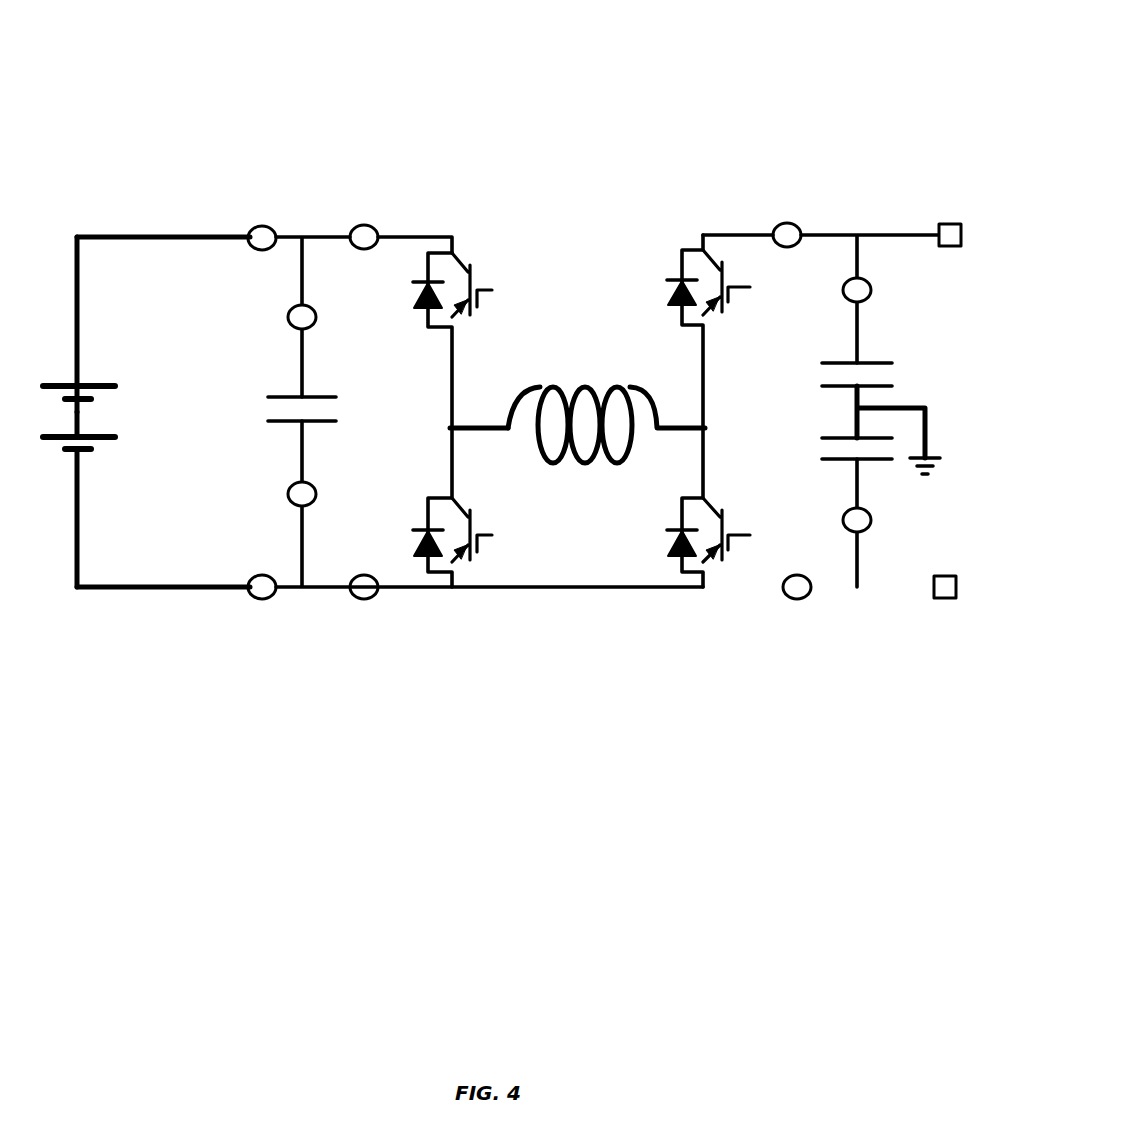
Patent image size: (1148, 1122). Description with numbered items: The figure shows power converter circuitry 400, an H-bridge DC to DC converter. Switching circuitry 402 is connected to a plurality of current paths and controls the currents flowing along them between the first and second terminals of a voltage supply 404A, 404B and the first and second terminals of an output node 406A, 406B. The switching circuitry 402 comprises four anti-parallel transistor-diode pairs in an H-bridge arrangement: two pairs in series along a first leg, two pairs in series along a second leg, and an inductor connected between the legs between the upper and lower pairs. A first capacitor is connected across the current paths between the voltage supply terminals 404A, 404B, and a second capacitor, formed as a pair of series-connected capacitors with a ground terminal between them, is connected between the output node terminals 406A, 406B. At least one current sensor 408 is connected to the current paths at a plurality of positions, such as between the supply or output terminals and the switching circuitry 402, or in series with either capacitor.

The power converter circuitry 400 is at (718, 78).
The switching circuitry 402 is at (543, 620).
The first terminal of voltage supply 404A is at (79, 451).
The second terminal of voltage supply 404B is at (79, 385).
The first terminal of output node 406A is at (945, 598).
The second terminal of output node 406B is at (950, 224).
The current sensor 408 is at (262, 226).